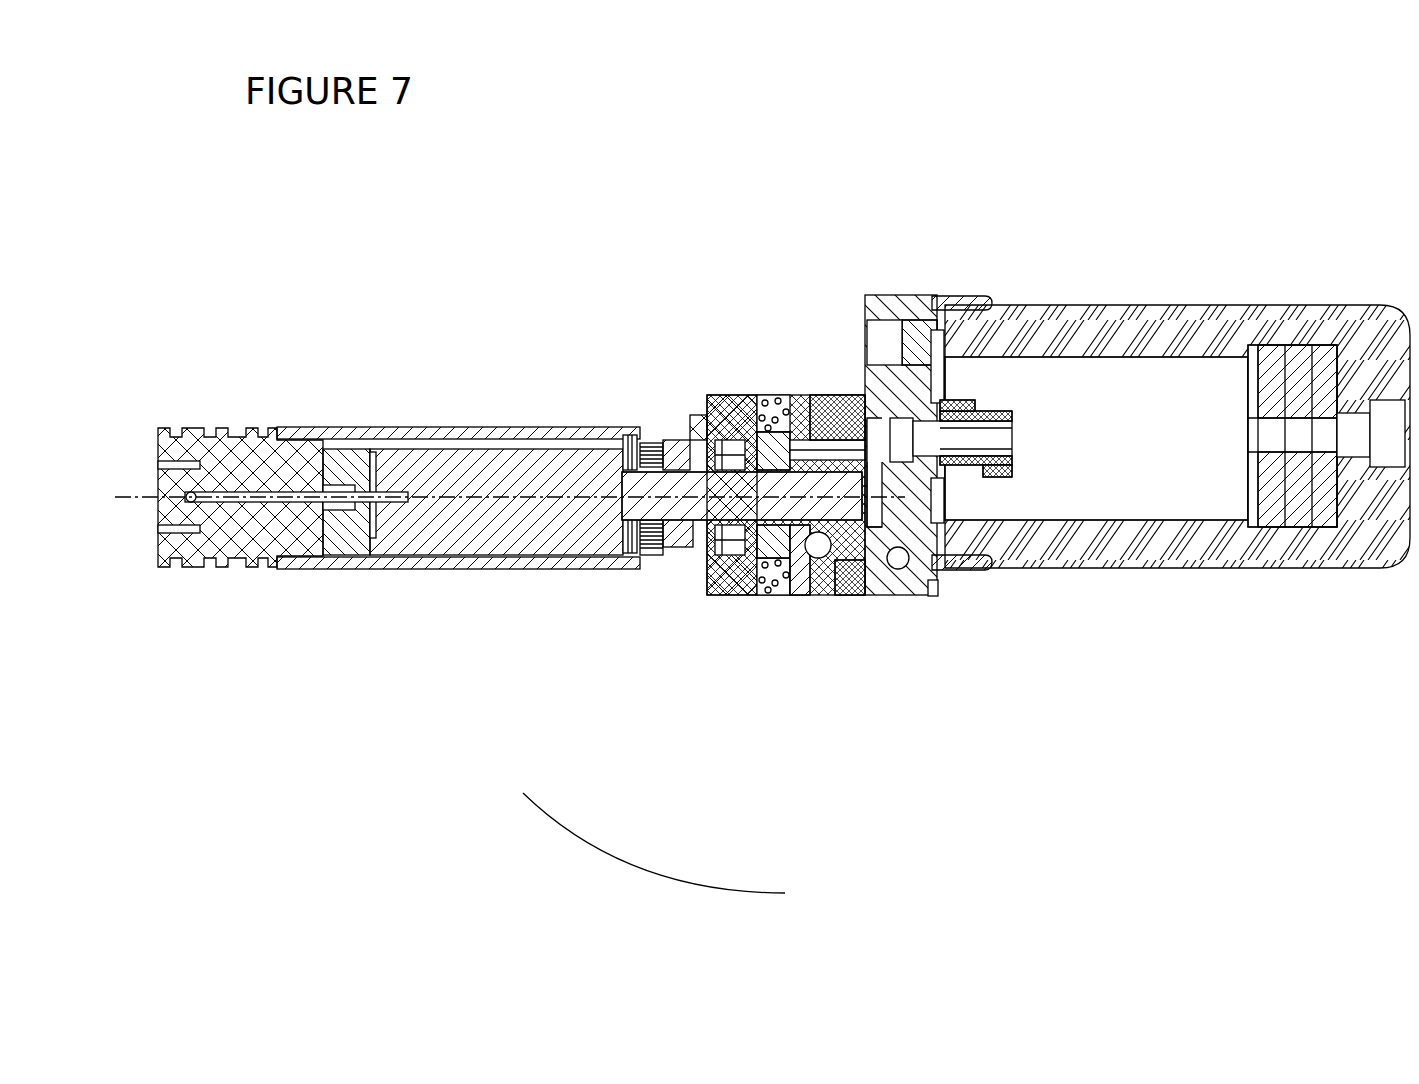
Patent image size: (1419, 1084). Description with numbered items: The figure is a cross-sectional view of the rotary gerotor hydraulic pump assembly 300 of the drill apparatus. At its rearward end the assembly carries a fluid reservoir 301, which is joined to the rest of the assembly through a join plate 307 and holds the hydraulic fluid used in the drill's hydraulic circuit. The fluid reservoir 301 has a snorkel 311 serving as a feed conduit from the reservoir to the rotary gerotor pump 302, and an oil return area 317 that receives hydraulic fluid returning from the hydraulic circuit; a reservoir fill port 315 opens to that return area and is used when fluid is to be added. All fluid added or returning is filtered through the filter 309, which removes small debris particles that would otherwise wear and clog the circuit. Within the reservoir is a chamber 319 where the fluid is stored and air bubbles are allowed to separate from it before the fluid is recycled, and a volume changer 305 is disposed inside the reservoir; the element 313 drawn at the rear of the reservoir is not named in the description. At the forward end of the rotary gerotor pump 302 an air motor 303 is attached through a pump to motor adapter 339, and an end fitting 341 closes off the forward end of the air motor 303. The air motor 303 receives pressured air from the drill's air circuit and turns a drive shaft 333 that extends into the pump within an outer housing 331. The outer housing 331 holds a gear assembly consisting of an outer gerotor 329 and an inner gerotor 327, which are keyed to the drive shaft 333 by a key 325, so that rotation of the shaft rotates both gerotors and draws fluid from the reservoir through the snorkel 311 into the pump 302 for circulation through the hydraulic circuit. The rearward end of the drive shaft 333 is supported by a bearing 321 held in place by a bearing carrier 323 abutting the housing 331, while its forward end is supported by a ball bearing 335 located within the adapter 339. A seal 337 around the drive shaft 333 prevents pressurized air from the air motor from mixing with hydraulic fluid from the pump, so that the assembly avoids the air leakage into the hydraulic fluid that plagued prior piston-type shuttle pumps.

The rotary gerotor hydraulic pump assembly 300 is at (640, 870).
The fluid reservoir 301 is at (1110, 304).
The rotary gerotor pump 302 is at (783, 378).
The air motor 303 is at (403, 427).
The volume changer 305 is at (1268, 370).
The join plate 307 is at (890, 294).
The filter 309 is at (955, 508).
The snorkel 311 is at (1020, 470).
The piston rod 313 is at (1398, 420).
The reservoir fill port 315 is at (880, 345).
The oil return area 317 is at (936, 380).
The chamber 319 is at (1158, 480).
The bearing 321 is at (857, 593).
The bearing carrier 323 is at (830, 598).
The key 325 is at (792, 593).
The inner gerotor 327 is at (783, 593).
The outer gerotor 329 is at (775, 593).
The outer housing 331 is at (767, 598).
The drive shaft 333 is at (678, 532).
The ball bearing 335 is at (700, 542).
The seal 337 is at (727, 531).
The pump to motor adapter 339 is at (711, 598).
The end fitting 341 is at (200, 427).